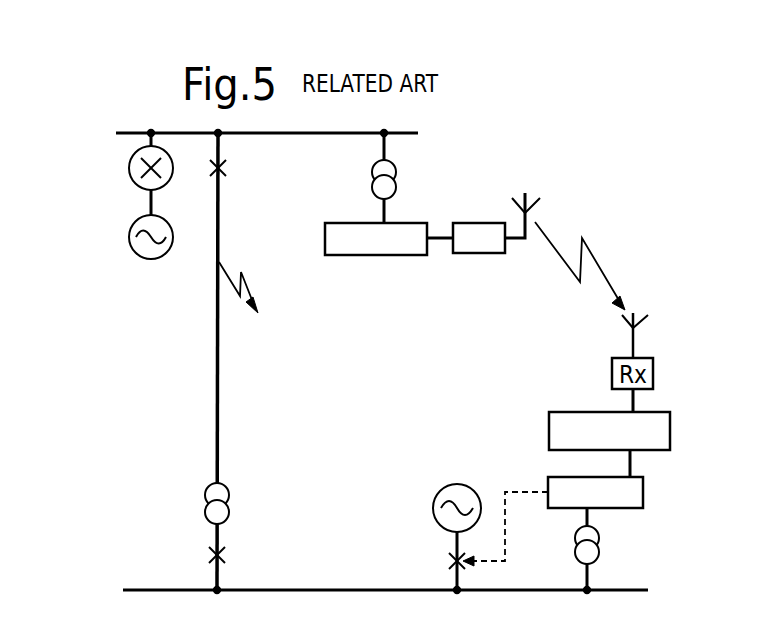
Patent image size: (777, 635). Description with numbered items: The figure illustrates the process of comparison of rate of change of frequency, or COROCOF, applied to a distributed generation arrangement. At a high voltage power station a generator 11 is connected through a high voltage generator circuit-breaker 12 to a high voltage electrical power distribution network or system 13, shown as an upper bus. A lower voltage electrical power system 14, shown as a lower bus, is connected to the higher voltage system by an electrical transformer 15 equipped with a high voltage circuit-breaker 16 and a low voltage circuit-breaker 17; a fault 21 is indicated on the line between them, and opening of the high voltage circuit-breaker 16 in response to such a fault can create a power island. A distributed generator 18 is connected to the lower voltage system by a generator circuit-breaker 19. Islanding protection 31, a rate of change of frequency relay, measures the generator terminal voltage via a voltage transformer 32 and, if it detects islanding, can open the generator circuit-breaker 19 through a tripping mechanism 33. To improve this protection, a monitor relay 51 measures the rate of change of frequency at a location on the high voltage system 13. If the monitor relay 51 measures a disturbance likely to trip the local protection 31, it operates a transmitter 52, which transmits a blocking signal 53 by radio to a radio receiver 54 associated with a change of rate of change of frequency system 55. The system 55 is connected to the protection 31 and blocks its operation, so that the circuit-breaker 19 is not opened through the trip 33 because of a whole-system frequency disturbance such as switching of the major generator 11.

The generator 11 is at (128, 237).
The high voltage generator circuit-breaker 12 is at (128, 167).
The high voltage electrical power distribution network or system 13 is at (138, 132).
The lower voltage electrical power system 14 is at (133, 587).
The electrical transformer 15 is at (205, 493).
The high voltage circuit-breaker 16 is at (228, 170).
The low voltage circuit-breaker 17 is at (223, 555).
The distributed generator 18 is at (452, 483).
The generator circuit-breaker 19 is at (452, 558).
The fault 21 is at (250, 313).
The islanding protection 31 is at (560, 477).
The voltage transformer 32 is at (600, 538).
The tripping mechanism 33 is at (507, 535).
The monitor relay 51 is at (397, 223).
The transmitter 52 is at (487, 223).
The blocking signal 53 is at (600, 263).
The radio receiver 54 is at (630, 343).
The change of rate of change of frequency system 55 is at (568, 411).